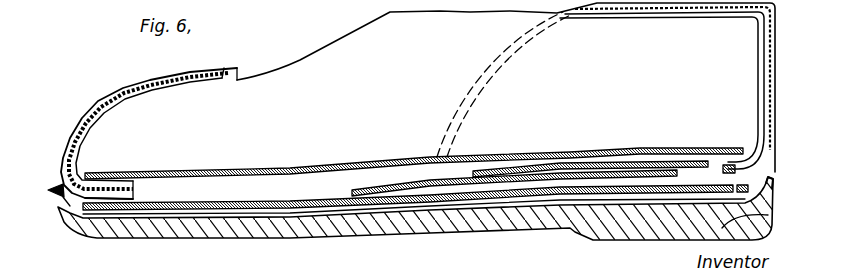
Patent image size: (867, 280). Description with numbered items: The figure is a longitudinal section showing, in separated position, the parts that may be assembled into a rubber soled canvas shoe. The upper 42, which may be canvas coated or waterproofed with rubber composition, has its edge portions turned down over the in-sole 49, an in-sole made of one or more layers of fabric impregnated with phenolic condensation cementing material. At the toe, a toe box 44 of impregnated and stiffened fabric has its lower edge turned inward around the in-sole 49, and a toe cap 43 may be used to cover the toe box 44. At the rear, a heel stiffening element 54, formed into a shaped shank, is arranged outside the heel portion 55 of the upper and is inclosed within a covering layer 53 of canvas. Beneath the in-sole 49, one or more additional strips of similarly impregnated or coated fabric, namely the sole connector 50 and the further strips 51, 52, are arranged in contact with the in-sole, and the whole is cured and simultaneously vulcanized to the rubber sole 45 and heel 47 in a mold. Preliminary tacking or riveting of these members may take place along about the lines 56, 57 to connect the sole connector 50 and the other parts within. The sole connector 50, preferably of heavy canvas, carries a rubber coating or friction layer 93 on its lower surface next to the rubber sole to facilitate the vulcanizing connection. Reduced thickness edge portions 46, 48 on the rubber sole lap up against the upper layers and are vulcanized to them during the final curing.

The upper 42 is at (352, 37).
The toe cap 43 is at (123, 87).
The toe box 44 is at (98, 105).
The rubber sole 45 is at (227, 240).
The reduced thickness edge portion 46 is at (63, 203).
The heel 47 is at (768, 216).
The reduced thickness edge portion 48 is at (774, 180).
The in-sole 49 is at (280, 172).
The sole connector 50 is at (288, 203).
The additional strip 51 is at (377, 188).
The additional strip 52 is at (537, 166).
The covering layer 53 is at (777, 60).
The heel stiffening element 54 is at (768, 92).
The heel portion of the upper 55 is at (760, 95).
The tacking line 56 is at (735, 157).
The tacking line 57 is at (133, 198).
The rubber coating or friction layer 93 is at (285, 218).